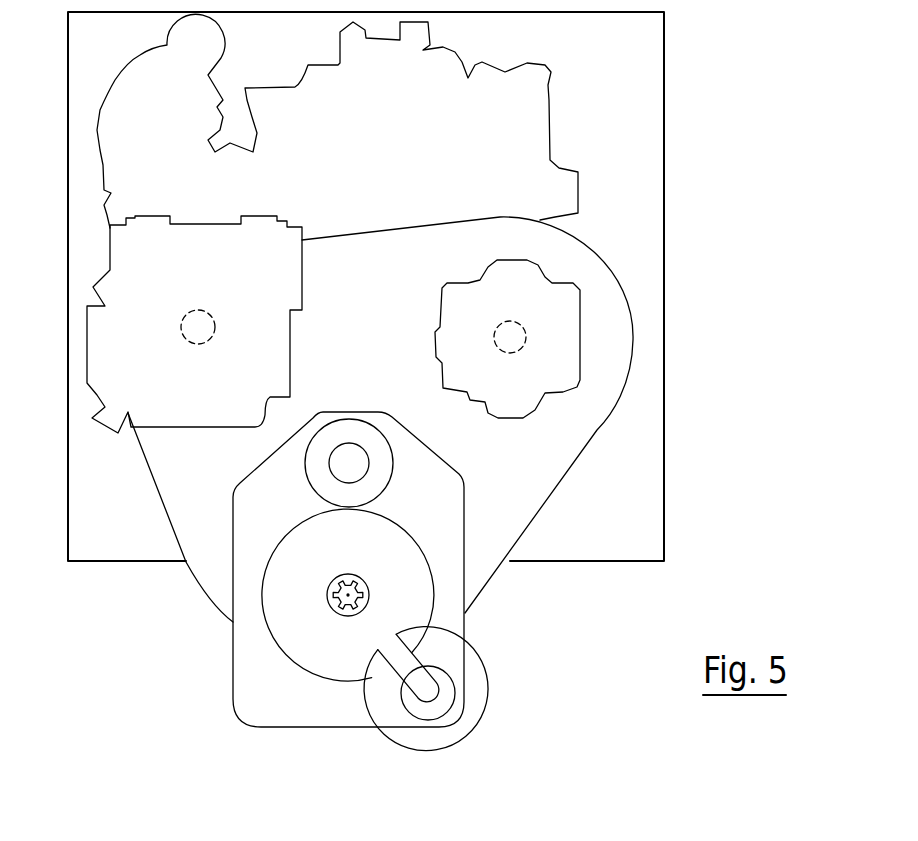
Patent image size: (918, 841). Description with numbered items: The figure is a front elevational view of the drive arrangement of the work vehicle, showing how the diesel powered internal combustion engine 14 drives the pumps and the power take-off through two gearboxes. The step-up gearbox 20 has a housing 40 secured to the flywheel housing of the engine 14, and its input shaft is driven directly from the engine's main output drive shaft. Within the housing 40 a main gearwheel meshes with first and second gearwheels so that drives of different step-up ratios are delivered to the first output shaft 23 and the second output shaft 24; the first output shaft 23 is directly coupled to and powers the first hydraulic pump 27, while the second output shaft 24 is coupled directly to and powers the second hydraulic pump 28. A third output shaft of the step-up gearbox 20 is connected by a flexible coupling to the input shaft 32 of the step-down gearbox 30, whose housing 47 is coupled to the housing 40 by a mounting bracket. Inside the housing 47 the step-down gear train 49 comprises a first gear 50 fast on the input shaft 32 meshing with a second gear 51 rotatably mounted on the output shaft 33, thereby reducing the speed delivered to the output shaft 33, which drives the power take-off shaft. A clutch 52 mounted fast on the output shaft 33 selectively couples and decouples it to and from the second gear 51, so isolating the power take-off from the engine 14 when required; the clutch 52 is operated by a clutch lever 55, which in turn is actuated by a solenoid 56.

The internal combustion engine 14 is at (525, 147).
The step-up gearbox 20 is at (622, 285).
The first output shaft 23 is at (192, 338).
The second output shaft 24 is at (517, 348).
The first hydraulic pump 27 is at (100, 361).
The second hydraulic pump 28 is at (570, 325).
The step-down gearbox 30 is at (450, 660).
The input shaft 32 is at (350, 448).
The output shaft 33 is at (330, 585).
The housing 40 is at (598, 427).
The housing 47 is at (455, 708).
The step-down gear train 49 is at (425, 500).
The first gear 50 is at (390, 445).
The second gear 51 is at (420, 550).
The clutch 52 is at (370, 675).
The clutch lever 55 is at (412, 658).
The solenoid 56 is at (428, 712).